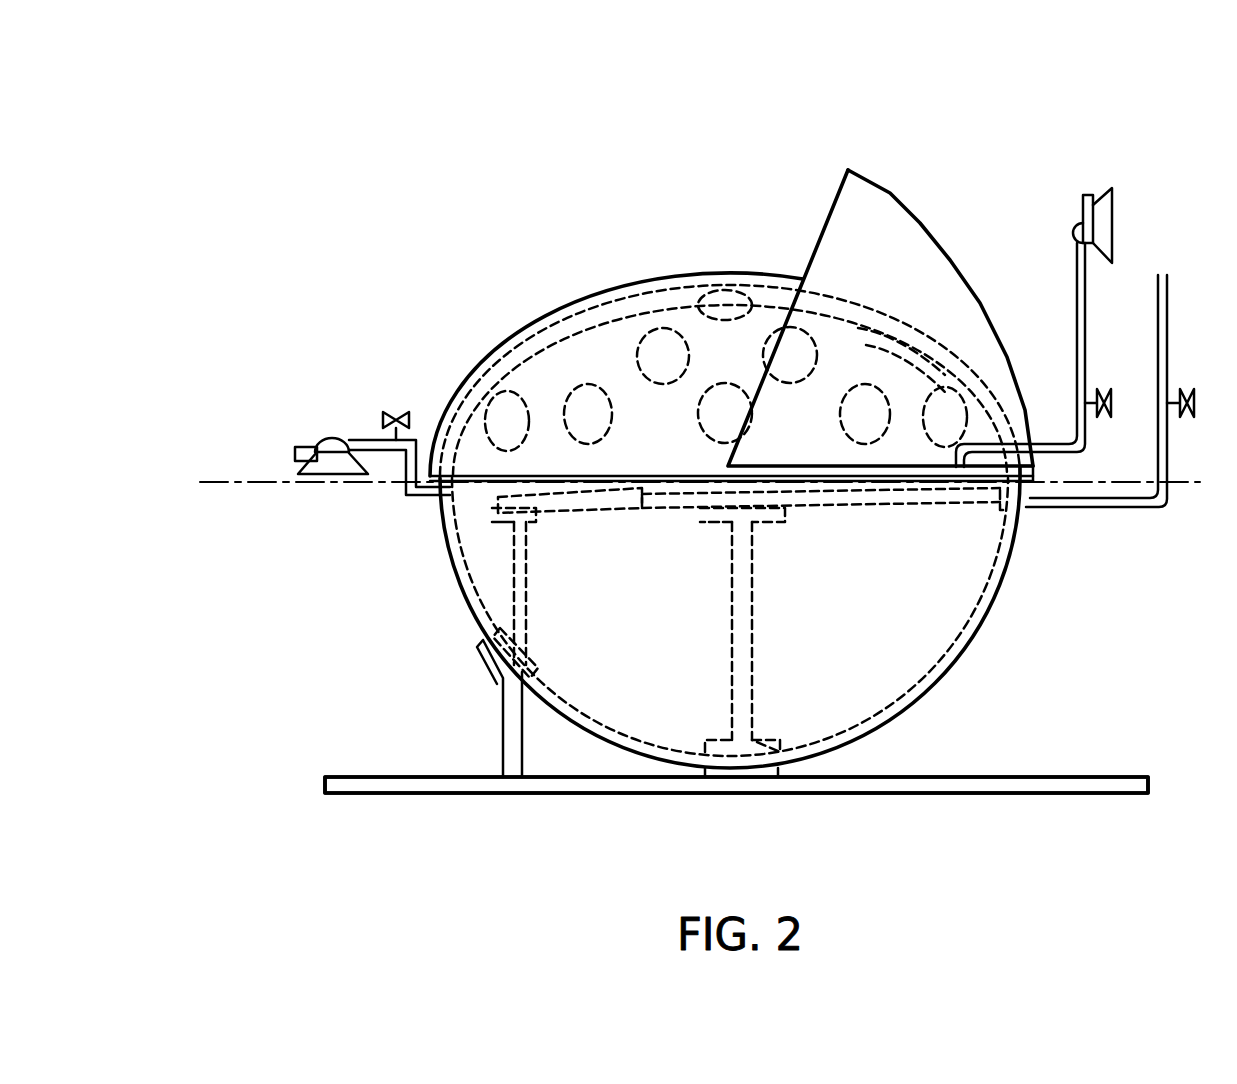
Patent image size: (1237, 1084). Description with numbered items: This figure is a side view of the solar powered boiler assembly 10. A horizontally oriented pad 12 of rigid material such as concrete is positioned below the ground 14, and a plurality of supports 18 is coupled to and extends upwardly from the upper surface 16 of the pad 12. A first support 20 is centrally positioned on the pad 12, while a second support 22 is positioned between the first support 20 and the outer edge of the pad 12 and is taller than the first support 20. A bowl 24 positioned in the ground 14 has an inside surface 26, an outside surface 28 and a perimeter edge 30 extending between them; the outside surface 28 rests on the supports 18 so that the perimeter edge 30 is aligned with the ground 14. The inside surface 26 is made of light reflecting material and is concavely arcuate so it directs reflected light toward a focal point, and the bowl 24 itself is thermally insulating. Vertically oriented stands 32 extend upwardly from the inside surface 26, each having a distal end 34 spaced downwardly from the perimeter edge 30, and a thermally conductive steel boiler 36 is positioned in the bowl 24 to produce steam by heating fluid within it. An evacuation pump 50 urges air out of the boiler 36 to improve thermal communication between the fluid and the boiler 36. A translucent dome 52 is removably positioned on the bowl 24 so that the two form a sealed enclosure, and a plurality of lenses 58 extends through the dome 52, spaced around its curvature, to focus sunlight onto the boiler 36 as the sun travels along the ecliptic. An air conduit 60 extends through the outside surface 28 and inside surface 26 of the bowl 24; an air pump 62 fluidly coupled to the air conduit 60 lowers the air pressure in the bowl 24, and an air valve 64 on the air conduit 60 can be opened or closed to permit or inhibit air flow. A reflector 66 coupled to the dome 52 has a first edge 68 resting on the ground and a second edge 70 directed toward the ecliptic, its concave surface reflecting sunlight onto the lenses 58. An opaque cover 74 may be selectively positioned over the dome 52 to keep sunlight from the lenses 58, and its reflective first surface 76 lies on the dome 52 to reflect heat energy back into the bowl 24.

The solar powered boiler assembly 10 is at (478, 165).
The pad 12 is at (372, 793).
The ground 14 is at (235, 478).
The upper surface 16 is at (340, 777).
The supports 18 is at (655, 775).
The first support 20 is at (783, 768).
The second support 22 is at (505, 740).
The bowl 24 is at (698, 617).
The inside surface 26 is at (960, 630).
The outside surface 28 is at (947, 667).
The perimeter edge 30 is at (1020, 473).
The stands 32 is at (520, 577).
The distal end 34 is at (743, 690).
The boiler 36 is at (508, 495).
The evacuation pump 50 is at (1077, 233).
The dome 52 is at (725, 313).
The lenses 58 is at (647, 340).
The air conduit 60 is at (383, 442).
The air pump 62 is at (333, 438).
The air valve 64 is at (398, 412).
The reflector 66 is at (893, 194).
The first edge 68 is at (1022, 470).
The second edge 70 is at (880, 278).
The cover 74 is at (728, 273).
The first surface 76 is at (845, 300).